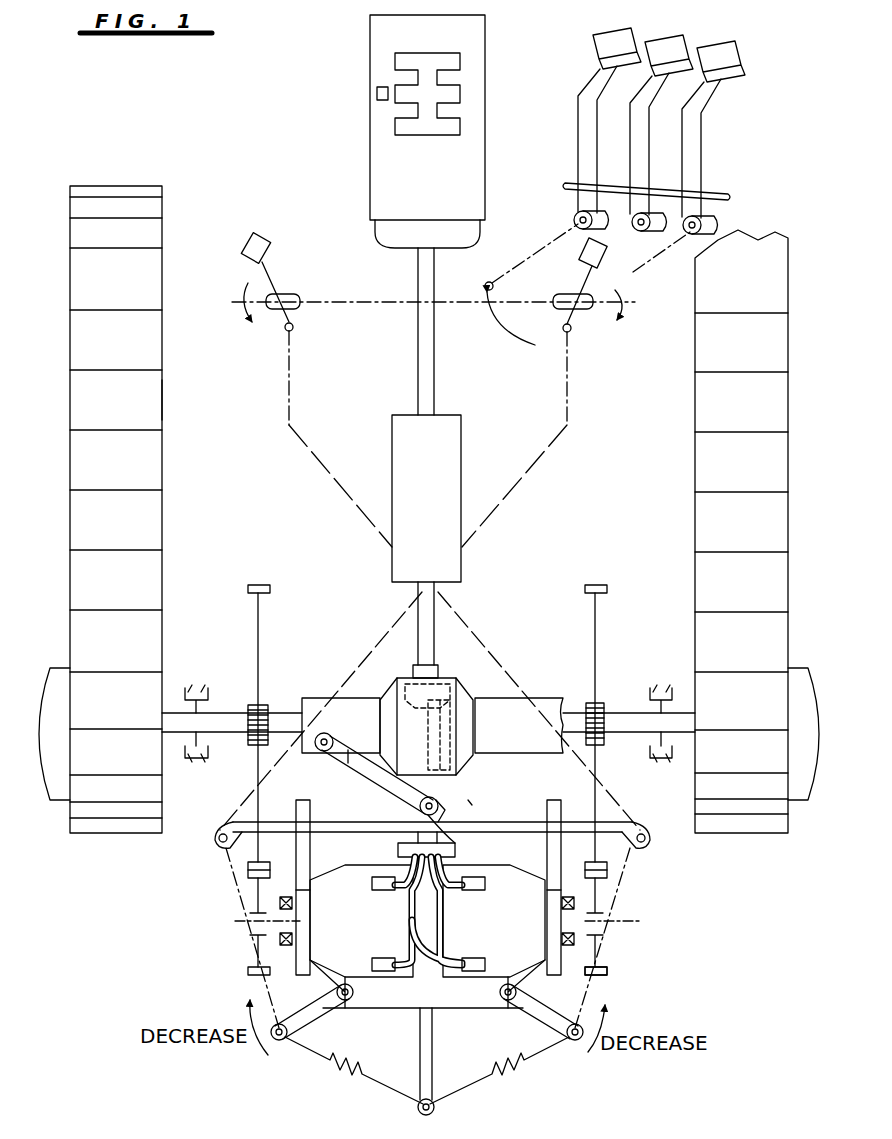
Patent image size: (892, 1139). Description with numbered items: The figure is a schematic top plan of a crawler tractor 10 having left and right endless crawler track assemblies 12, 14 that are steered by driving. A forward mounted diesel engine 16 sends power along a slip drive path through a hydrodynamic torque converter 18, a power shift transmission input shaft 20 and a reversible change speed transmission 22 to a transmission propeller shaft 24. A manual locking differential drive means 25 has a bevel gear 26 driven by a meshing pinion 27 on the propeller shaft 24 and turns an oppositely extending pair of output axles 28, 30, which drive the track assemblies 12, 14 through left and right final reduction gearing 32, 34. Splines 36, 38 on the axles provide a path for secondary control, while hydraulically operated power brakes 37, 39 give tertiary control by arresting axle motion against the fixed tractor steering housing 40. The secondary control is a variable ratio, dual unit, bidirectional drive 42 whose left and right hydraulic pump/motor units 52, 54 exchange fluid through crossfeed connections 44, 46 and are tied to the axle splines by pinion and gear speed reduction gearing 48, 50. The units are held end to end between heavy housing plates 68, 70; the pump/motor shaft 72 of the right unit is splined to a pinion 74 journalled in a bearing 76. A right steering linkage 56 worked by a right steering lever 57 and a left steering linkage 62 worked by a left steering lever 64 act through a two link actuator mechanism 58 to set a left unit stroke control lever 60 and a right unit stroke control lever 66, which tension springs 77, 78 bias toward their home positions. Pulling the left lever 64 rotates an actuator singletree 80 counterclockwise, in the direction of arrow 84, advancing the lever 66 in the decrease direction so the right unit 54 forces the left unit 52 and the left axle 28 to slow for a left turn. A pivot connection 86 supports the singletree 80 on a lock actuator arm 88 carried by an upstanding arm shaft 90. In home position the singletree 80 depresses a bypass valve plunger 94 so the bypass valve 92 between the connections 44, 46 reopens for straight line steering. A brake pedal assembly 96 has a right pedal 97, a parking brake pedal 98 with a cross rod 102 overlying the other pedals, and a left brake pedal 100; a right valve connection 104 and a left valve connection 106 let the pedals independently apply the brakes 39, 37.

The tractor 10 is at (87, 183).
The left endless crawler track assembly 12 is at (162, 404).
The right endless crawler track assembly 14 is at (695, 398).
The diesel engine 16 is at (383, 148).
The hydrodynamic torque converter 18 is at (394, 242).
The power shift transmission input shaft 20 is at (434, 355).
The reversible, change speed transmission 22 is at (461, 418).
The transmission propeller shaft 24 is at (418, 590).
The manual locking differential drive means 25 is at (388, 690).
The bevel gear 26 is at (455, 690).
The pinion 27 is at (408, 683).
The left output axle 28 is at (245, 740).
The right output axle 30 is at (620, 712).
The left final reduction gearing 32 is at (50, 666).
The right final reduction gearing 34 is at (808, 678).
The spline 36 is at (250, 712).
The hydraulically operated power brake 37 is at (186, 692).
The spline 38 is at (602, 745).
The hydraulically operated power brake 39 is at (672, 690).
The fixed tractor steering housing 40 is at (200, 688).
The variable ratio, dual unit, bidirectional drive 42 is at (500, 1020).
The crossfeed connection 44 is at (402, 900).
The crossfeed connection 46 is at (452, 904).
The pinion and gear speed reduction gearing 48 is at (607, 868).
The pinion and gear speed reduction gearing 50 is at (246, 900).
The left unit 52 is at (361, 936).
The right unit 54 is at (494, 936).
The right steering linkage 56 is at (530, 488).
The right steering lever 57 is at (580, 270).
The two link actuator mechanism 58 is at (410, 798).
The left unit stroke control lever 60 is at (316, 1023).
The left steering linkage 62 is at (342, 488).
The left steering lever 64 is at (274, 268).
The right unit stroke control lever 66 is at (568, 1040).
The heavy housing plate 68 is at (296, 806).
The heavy housing plate 70 is at (561, 820).
The pump/motor shaft 72 is at (622, 920).
The pinion 74 is at (607, 973).
The bearing 76 is at (570, 948).
The tension spring 77 is at (348, 1072).
The tension spring 78 is at (508, 1072).
The actuator singletree 80 is at (490, 822).
The arrow 84 is at (470, 775).
The pivot connection 86 is at (420, 808).
The lock actuator arm 88 is at (348, 763).
The arm shaft 90 is at (330, 740).
The plunger operated bypass valve 92 is at (362, 834).
The bypass valve plunger 94 is at (470, 804).
The tractor brake pedal assembly 96 is at (635, 131).
The right pedal 97 is at (708, 112).
The parking brake pedal 98 is at (640, 144).
The left brake pedal 100 is at (586, 140).
The cross rod 102 is at (574, 184).
The right valve connection 104 is at (678, 252).
The left valve connection 106 is at (568, 228).